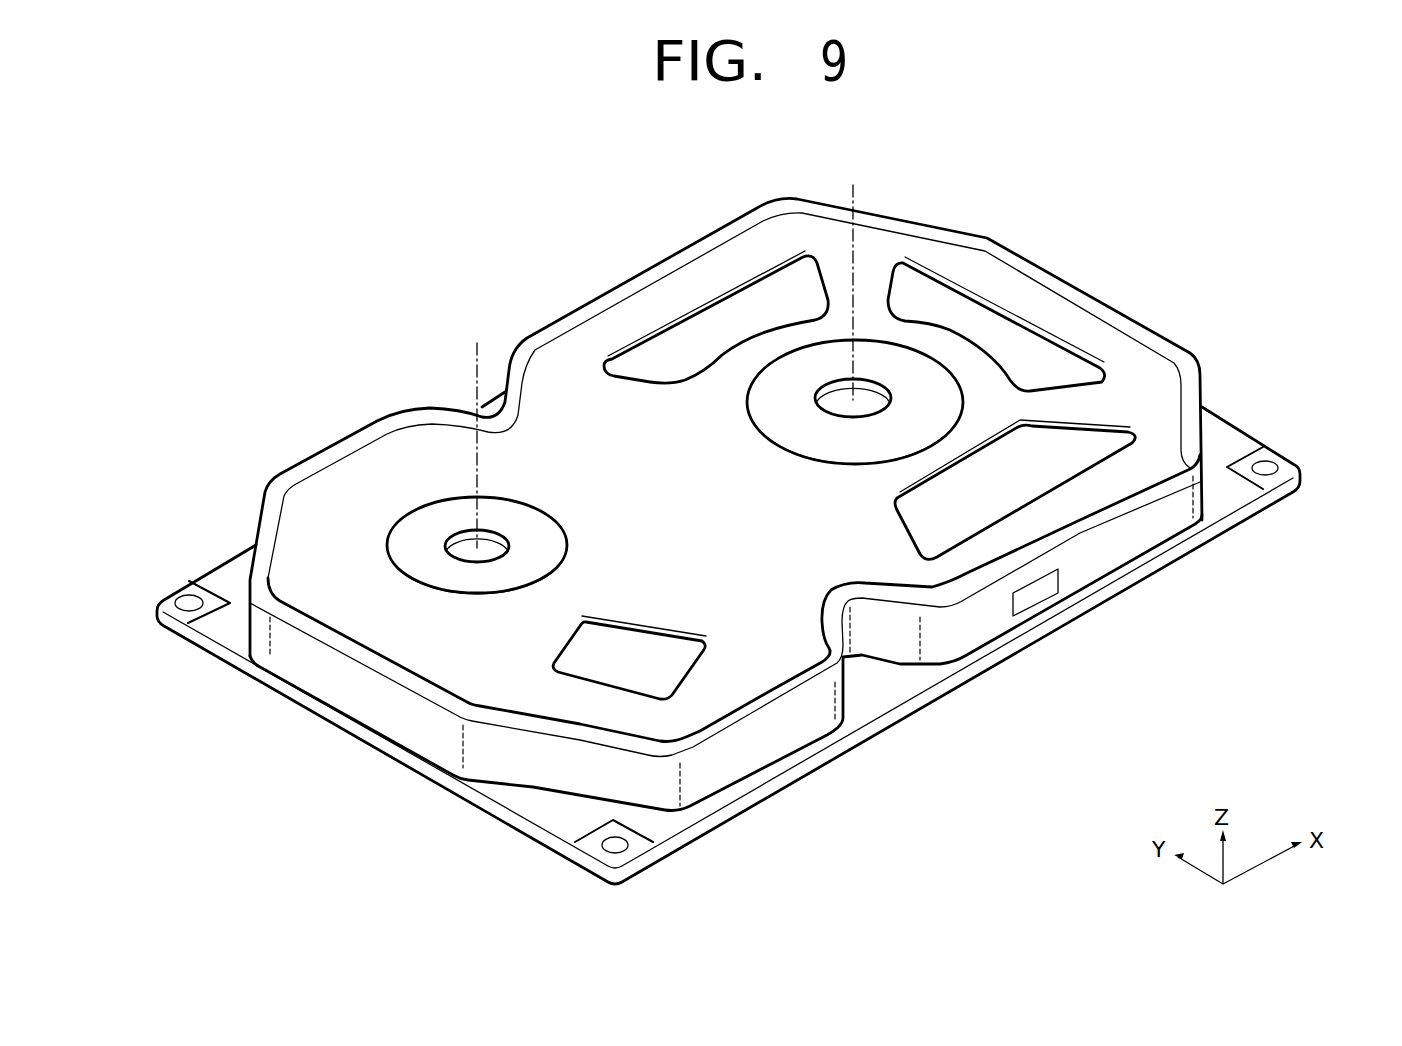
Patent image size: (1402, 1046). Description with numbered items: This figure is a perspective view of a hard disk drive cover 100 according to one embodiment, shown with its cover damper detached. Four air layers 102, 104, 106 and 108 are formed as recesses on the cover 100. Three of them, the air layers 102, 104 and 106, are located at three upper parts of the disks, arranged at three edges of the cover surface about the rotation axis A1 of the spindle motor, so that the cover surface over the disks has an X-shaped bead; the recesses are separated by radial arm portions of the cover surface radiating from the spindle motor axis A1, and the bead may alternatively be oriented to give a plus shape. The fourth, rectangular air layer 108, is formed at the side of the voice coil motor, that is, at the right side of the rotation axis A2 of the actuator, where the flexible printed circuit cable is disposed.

The cover 100 is at (385, 411).
The air layer 102 is at (775, 292).
The air layer 104 is at (953, 302).
The air layer 106 is at (1079, 447).
The rectangular air layer 108 is at (648, 645).
The rotation axis of the spindle motor A1 is at (858, 243).
The rotation axis of the actuator A2 is at (473, 373).